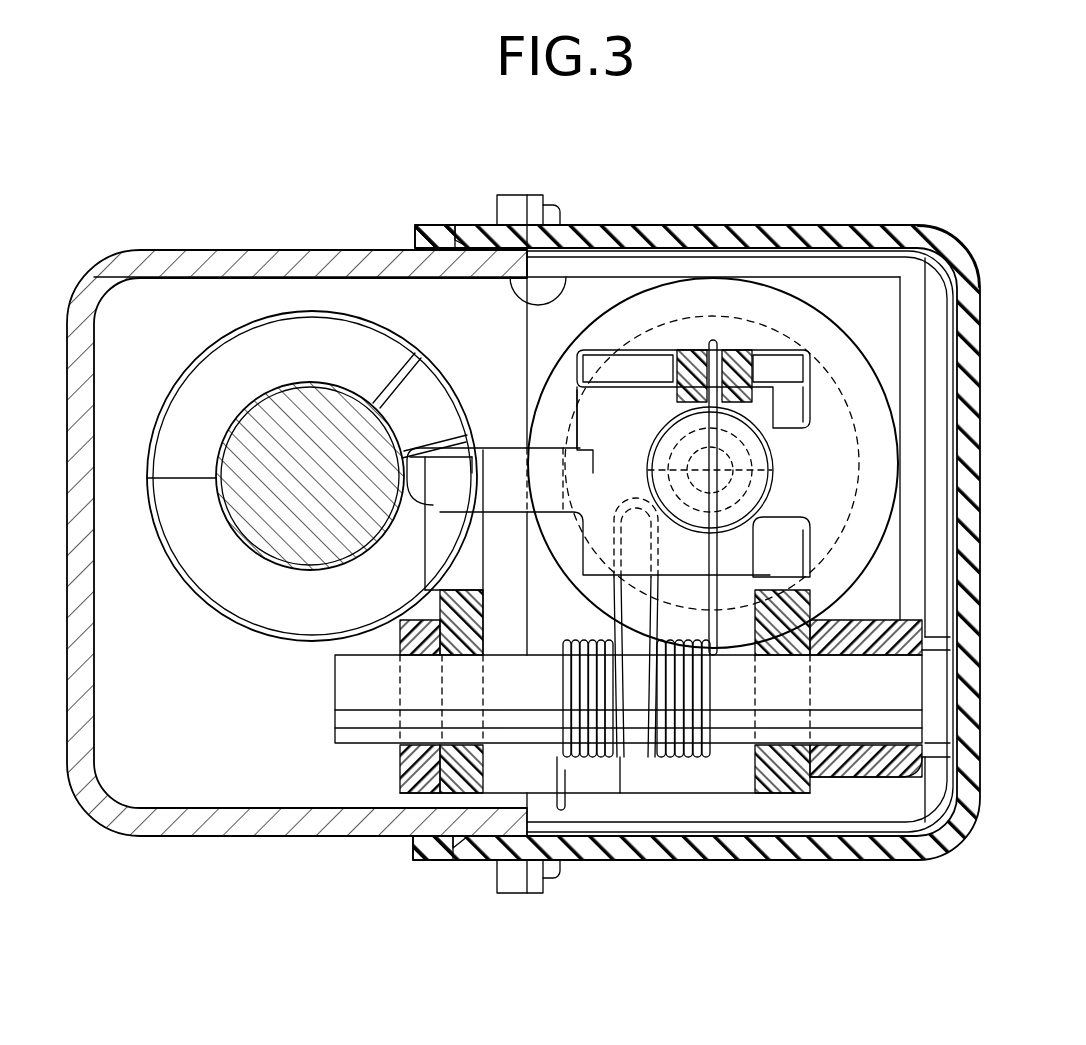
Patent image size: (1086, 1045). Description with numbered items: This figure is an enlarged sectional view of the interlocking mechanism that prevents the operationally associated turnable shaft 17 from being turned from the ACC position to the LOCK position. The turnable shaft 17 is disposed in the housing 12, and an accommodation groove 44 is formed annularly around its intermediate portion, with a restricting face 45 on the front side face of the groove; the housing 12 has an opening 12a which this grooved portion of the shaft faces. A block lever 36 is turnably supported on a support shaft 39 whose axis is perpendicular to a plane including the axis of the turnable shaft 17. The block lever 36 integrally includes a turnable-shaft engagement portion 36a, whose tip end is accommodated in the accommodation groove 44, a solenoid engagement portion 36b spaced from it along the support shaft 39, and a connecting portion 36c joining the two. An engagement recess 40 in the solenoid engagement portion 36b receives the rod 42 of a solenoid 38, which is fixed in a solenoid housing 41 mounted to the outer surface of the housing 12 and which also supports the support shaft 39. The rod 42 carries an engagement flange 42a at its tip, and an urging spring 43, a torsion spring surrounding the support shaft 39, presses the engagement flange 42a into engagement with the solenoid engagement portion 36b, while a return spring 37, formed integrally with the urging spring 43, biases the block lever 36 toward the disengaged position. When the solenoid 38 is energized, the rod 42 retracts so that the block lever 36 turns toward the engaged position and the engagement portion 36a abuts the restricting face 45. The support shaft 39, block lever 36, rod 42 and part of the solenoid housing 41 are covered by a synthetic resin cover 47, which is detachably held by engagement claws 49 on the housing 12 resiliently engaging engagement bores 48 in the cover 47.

The housing 12 is at (197, 263).
The opening 12a is at (578, 278).
The operationally associated turnable shaft 17 is at (217, 618).
The block lever 36 is at (816, 558).
The turnable-shaft engagement portion 36a is at (425, 500).
The solenoid engagement portion 36b is at (624, 412).
The connecting portion 36c is at (497, 470).
The return spring 37 is at (557, 795).
The solenoid 38 is at (815, 305).
The support shaft 39 is at (737, 723).
The engagement recess 40 is at (775, 465).
The solenoid housing 41 is at (853, 257).
The rod 42 is at (656, 490).
The engagement flange 42a is at (757, 488).
The urging spring 43 is at (690, 760).
The accommodation groove 44 is at (265, 625).
The restricting face 45 is at (410, 392).
The cover 47 is at (967, 243).
The engagement bores 48 is at (478, 222).
The engagement claws 49 is at (460, 222).